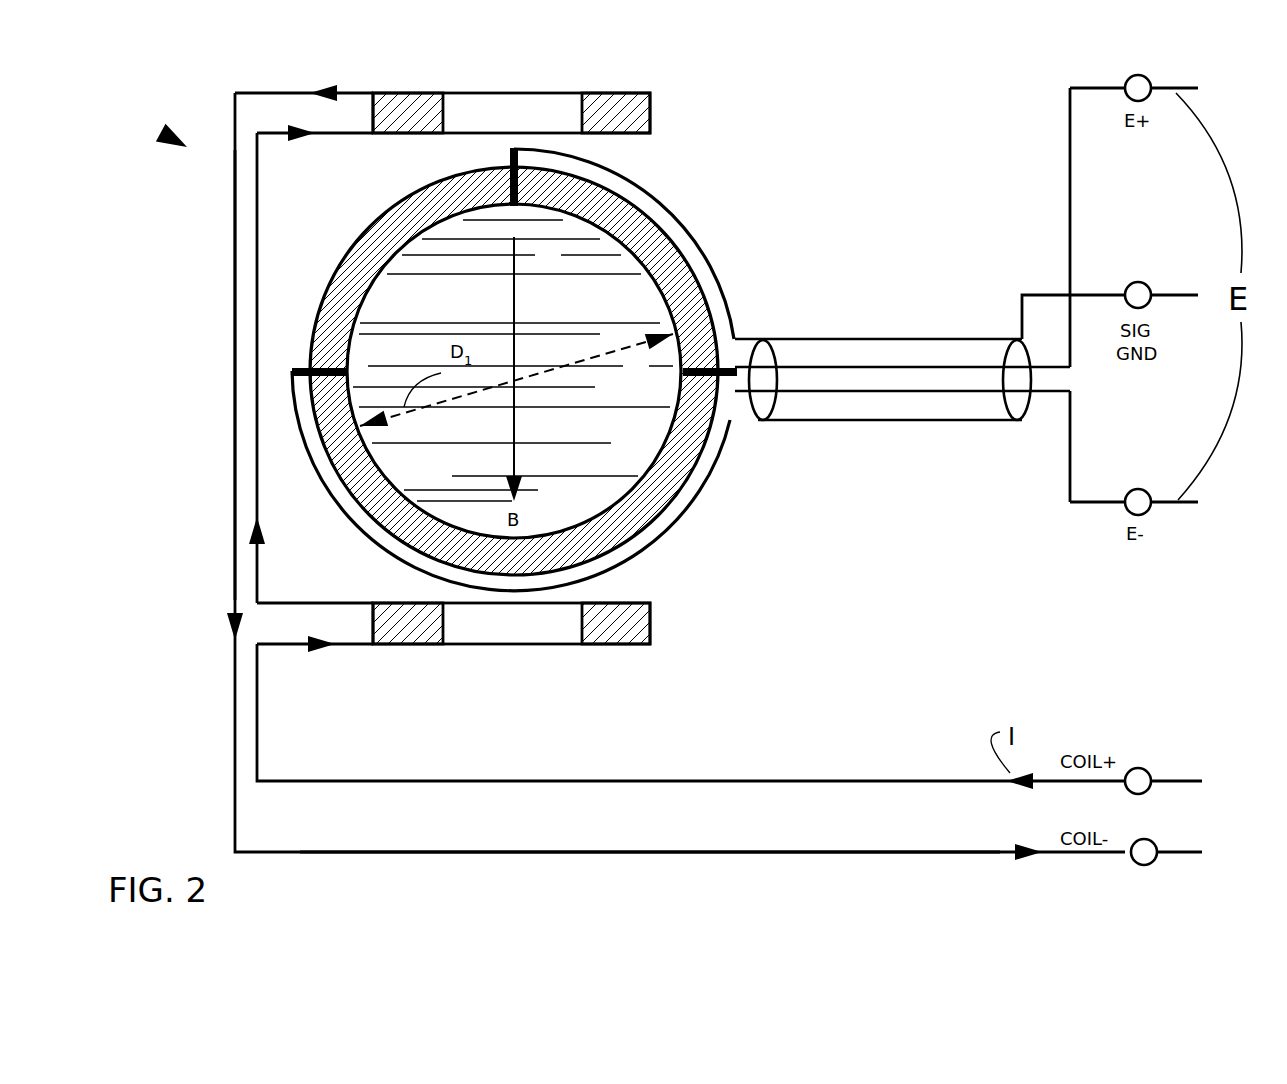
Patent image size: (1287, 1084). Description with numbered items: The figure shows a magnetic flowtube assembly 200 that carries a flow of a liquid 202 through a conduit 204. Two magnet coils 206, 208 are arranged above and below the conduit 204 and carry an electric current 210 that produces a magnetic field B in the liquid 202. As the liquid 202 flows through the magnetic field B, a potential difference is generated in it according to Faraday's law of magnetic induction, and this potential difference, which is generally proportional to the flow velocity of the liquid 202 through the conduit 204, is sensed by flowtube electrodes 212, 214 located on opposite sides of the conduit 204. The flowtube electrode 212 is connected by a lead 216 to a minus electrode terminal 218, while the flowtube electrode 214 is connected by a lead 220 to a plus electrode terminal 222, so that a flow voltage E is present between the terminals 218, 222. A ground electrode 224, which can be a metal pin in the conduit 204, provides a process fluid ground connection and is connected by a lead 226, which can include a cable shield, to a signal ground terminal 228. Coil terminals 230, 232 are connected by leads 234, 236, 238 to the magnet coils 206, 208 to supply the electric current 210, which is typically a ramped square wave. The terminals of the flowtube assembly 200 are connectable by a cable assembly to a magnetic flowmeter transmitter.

The magnetic flowtube assembly 200 is at (165, 136).
The liquid 202 is at (457, 309).
The conduit 204 is at (655, 214).
The magnet coil 206 is at (407, 133).
The magnet coil 208 is at (393, 647).
The electric current 210 is at (235, 617).
The flowtube electrode 212 is at (300, 367).
The flowtube electrode 214 is at (735, 333).
The lead 216 is at (848, 393).
The minus electrode terminal 218 is at (1140, 489).
The lead 220 is at (845, 367).
The plus electrode terminal 222 is at (1130, 77).
The ground electrode 224 is at (510, 152).
The lead 226 is at (1050, 295).
The signal ground terminal 228 is at (1138, 282).
The coil terminal 230 is at (1141, 768).
The coil terminal 232 is at (1145, 866).
The lead 234 is at (840, 781).
The lead 236 is at (836, 853).
The lead 238 is at (258, 238).